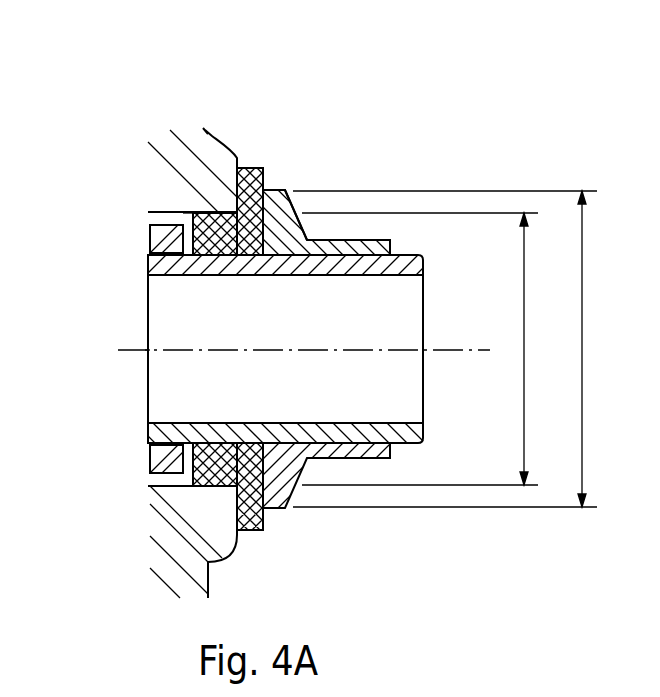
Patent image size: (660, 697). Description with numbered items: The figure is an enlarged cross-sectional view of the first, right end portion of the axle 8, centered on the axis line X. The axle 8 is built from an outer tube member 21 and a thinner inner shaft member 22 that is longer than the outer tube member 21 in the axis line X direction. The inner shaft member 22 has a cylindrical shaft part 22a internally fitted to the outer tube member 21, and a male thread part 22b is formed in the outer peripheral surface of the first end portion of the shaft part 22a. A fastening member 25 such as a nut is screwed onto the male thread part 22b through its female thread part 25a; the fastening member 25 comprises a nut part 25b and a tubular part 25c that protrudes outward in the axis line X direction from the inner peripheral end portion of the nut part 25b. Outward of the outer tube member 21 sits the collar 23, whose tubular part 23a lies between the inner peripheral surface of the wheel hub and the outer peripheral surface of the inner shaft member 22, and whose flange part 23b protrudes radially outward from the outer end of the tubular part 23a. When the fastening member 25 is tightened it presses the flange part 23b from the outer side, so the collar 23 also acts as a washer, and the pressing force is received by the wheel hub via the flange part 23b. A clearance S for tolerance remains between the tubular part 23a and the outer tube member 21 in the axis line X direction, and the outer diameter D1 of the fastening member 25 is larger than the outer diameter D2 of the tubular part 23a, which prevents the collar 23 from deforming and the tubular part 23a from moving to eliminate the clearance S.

The axle 8 is at (60, 213).
The outer tube member 21 is at (150, 232).
The inner shaft member 22 is at (150, 264).
The shaft part 22a is at (170, 290).
The male thread part 22b is at (405, 450).
The collar 23 is at (285, 58).
The tubular part 23a is at (197, 212).
The flange part 23b is at (248, 168).
The fastening member 25 is at (390, 240).
The female thread part 25a is at (333, 458).
The nut part 25b is at (285, 190).
The tubular part 25c is at (348, 240).
The clearance S is at (213, 212).
The axis line X is at (145, 350).
The outer diameter D1 is at (455, 349).
The outer diameter D2 is at (431, 349).